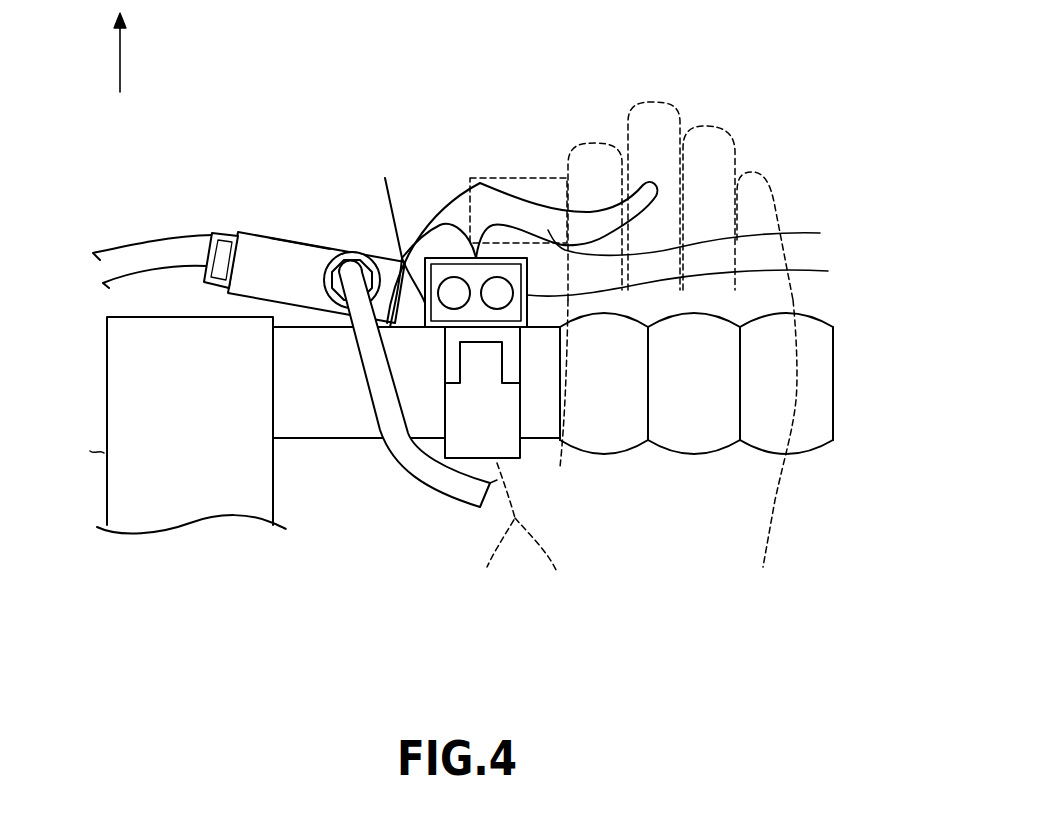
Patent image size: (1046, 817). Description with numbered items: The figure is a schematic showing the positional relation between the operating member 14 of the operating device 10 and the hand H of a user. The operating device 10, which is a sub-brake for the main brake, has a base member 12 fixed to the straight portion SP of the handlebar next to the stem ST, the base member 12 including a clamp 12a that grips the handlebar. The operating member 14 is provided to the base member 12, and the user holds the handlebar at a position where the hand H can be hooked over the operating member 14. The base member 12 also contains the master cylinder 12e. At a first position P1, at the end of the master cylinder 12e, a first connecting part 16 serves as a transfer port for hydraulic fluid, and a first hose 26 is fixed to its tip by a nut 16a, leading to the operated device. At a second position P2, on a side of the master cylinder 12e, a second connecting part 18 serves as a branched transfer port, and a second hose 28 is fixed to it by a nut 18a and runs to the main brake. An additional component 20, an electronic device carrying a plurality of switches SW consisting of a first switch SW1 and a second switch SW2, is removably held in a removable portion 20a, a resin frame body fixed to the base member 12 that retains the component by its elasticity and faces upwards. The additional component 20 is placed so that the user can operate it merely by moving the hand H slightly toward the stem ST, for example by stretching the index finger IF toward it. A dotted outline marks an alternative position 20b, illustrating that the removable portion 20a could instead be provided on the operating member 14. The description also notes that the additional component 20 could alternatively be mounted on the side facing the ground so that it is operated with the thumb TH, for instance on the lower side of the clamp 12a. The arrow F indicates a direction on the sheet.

The operating device 10 is at (498, 308).
The base member 12 is at (404, 257).
The clamp 12a is at (510, 352).
The master cylinder 12e is at (294, 241).
The operating member 14 is at (700, 237).
The first connecting part 16 is at (257, 246).
The nut 16a is at (223, 236).
The second connecting part 18 is at (372, 262).
The nut 18a is at (336, 268).
The additional component 20 is at (511, 192).
The removable portion 20a is at (701, 277).
The alternative position 20b is at (559, 178).
The first hose 26 is at (150, 240).
The second hose 28 is at (424, 489).
The forward direction F is at (129, 52).
The hand H is at (621, 315).
The index finger IF is at (612, 137).
The thumb TH is at (501, 526).
The first position P1 is at (240, 232).
The second position P2 is at (322, 306).
The stem ST is at (106, 456).
The straight portion SP is at (359, 440).
The switches SW is at (527, 104).
The first switch SW1 is at (451, 284).
The second switch SW2 is at (497, 284).